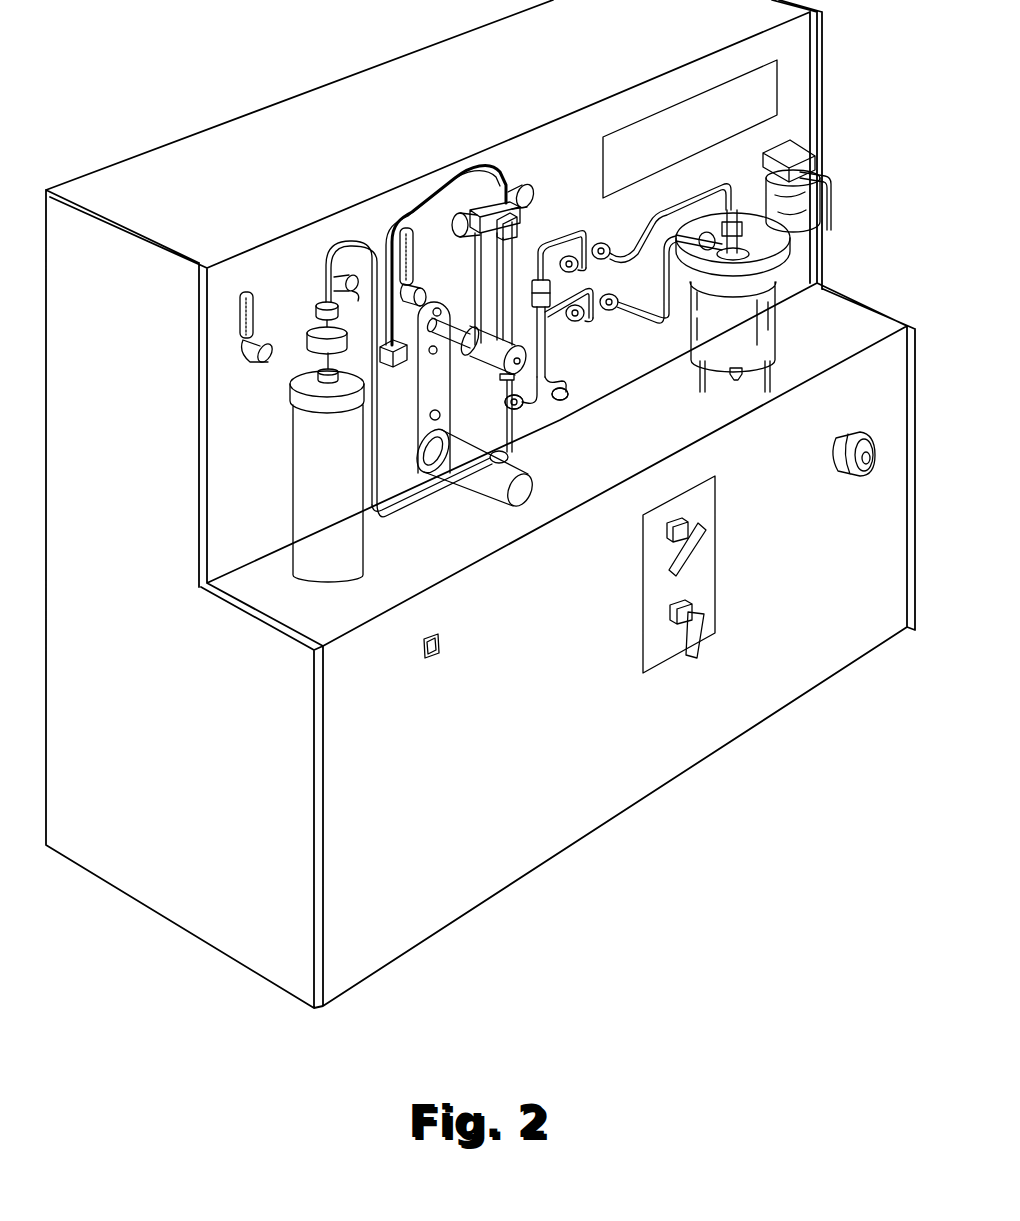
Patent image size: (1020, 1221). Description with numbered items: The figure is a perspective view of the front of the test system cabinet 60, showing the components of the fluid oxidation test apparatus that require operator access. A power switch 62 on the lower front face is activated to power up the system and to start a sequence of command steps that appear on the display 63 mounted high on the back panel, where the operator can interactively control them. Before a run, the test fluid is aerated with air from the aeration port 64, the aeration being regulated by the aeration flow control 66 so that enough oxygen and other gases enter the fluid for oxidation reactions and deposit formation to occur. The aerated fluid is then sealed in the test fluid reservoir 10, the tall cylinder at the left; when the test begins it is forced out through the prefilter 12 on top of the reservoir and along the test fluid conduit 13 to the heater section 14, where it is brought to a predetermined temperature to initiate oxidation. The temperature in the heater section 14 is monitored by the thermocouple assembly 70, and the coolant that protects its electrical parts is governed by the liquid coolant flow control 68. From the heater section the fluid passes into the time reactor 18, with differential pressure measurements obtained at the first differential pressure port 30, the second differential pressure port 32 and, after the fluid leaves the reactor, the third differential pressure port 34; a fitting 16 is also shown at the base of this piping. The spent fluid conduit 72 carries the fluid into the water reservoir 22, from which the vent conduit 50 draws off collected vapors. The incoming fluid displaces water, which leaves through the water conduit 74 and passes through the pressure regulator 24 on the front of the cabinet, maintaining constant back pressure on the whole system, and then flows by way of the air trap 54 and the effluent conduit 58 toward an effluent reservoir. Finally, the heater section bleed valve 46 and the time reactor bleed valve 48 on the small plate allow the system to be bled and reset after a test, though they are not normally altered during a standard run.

The test fluid reservoir 10 is at (303, 475).
The prefilter 12 is at (312, 332).
The test fluid conduit 13 is at (432, 490).
The heater section 14 is at (512, 446).
The fitting 16 is at (525, 406).
The time reactor 18 is at (548, 353).
The water reservoir 22 is at (733, 301).
The pressure regulator 24 is at (832, 440).
The first differential pressure port 30 is at (573, 383).
The second differential pressure port 32 is at (598, 320).
The third differential pressure port 34 is at (570, 238).
The heater section bleed valve 46 is at (670, 542).
The time reactor bleed valve 48 is at (670, 621).
The vent conduit 50 is at (647, 221).
The air trap 54 is at (822, 232).
The effluent conduit 58 is at (835, 200).
The test system cabinet 60 is at (533, 760).
The power switch 62 is at (440, 652).
The display 63 is at (660, 128).
The aeration port 64 is at (343, 277).
The aeration flow control 66 is at (243, 333).
The liquid coolant flow control 68 is at (408, 232).
The thermocouple assembly 70 is at (455, 177).
The spent fluid conduit 72 is at (653, 323).
The water conduit 74 is at (733, 380).